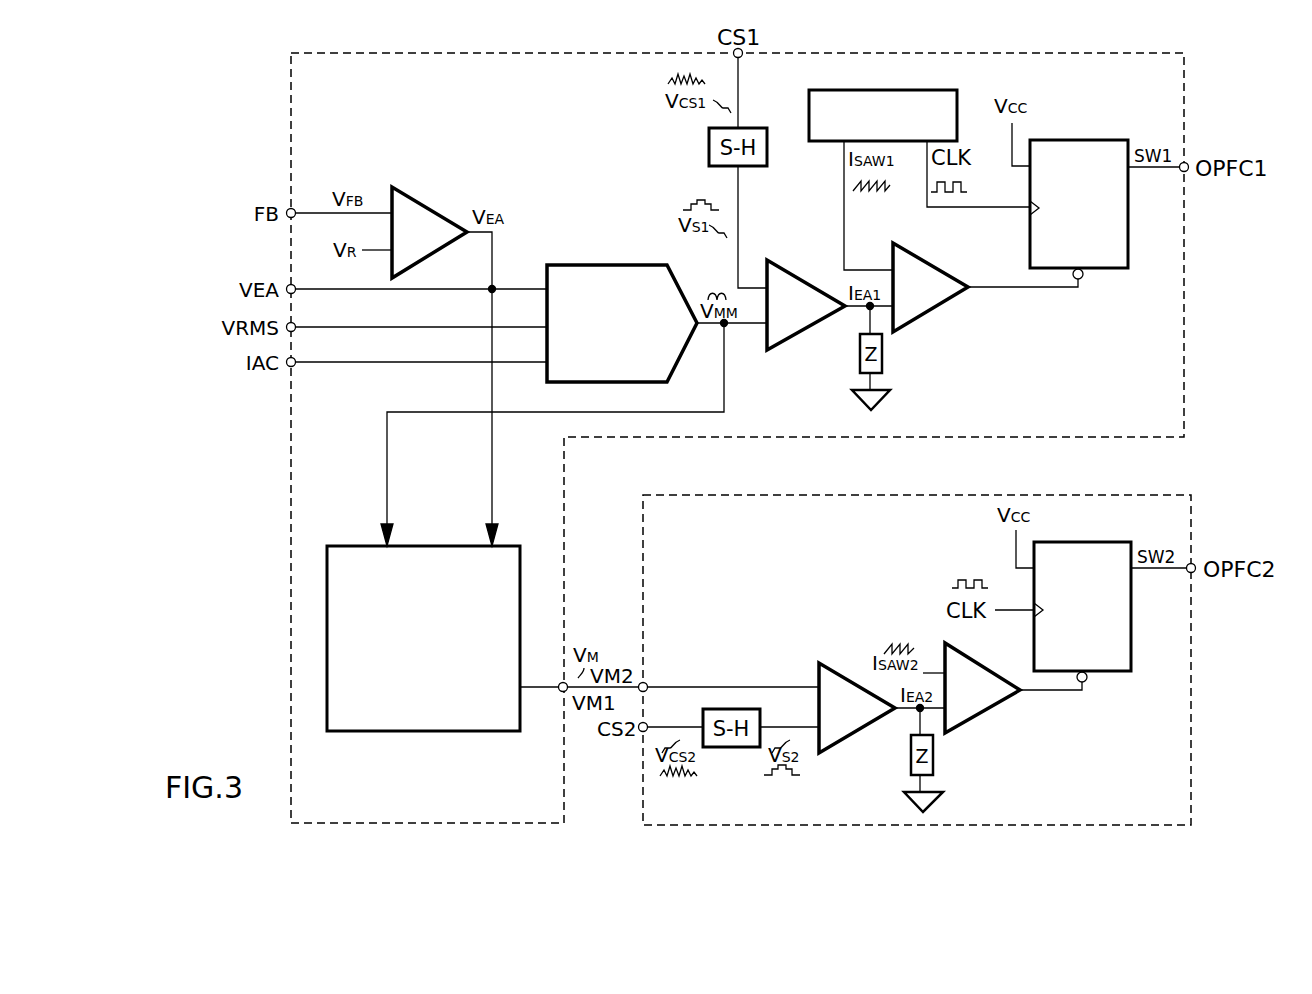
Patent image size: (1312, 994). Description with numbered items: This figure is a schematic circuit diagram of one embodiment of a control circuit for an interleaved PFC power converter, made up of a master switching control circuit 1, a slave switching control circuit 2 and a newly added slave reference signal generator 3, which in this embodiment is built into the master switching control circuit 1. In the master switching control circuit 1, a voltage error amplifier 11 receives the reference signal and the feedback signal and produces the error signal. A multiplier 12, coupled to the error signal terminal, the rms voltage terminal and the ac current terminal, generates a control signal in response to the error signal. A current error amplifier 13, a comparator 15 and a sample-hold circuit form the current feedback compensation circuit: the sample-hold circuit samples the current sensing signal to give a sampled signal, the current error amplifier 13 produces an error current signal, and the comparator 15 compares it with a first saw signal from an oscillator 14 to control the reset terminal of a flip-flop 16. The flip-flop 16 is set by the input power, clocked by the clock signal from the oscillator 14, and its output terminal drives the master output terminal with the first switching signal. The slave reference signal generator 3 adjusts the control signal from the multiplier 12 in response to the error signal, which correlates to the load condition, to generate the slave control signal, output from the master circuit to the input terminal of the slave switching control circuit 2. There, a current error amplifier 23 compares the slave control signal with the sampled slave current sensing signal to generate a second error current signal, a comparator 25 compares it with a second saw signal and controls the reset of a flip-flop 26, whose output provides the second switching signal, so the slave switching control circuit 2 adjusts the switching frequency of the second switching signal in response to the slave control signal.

The master switching control circuit 1 is at (737, 424).
The slave switching control circuit 2 is at (917, 643).
The slave reference signal generator 3 is at (425, 625).
The voltage error amplifier 11 is at (429, 220).
The multiplier 12 is at (622, 310).
The current error amplifier 13 is at (806, 298).
The oscillator 14 is at (883, 101).
The comparator 15 is at (930, 281).
The flip-flop 16 is at (1079, 191).
The current error amplifier 23 is at (857, 699).
The comparator 25 is at (982, 686).
The flip-flop 26 is at (1083, 593).